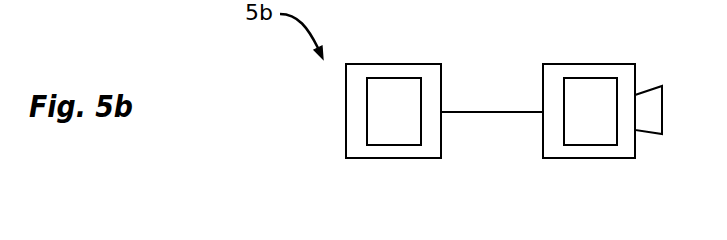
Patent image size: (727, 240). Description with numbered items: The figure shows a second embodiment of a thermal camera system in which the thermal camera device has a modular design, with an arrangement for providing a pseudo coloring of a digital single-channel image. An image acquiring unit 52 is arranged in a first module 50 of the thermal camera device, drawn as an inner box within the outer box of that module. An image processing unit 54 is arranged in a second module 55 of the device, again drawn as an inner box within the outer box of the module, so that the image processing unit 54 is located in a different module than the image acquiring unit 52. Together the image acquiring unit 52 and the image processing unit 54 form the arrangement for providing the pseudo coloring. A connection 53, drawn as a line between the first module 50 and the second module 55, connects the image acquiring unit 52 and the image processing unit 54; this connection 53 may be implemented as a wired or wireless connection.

The first module 50 is at (582, 158).
The image acquiring unit 52 is at (583, 78).
The connection 53 is at (458, 112).
The image processing unit 54 is at (383, 78).
The second module 55 is at (378, 158).